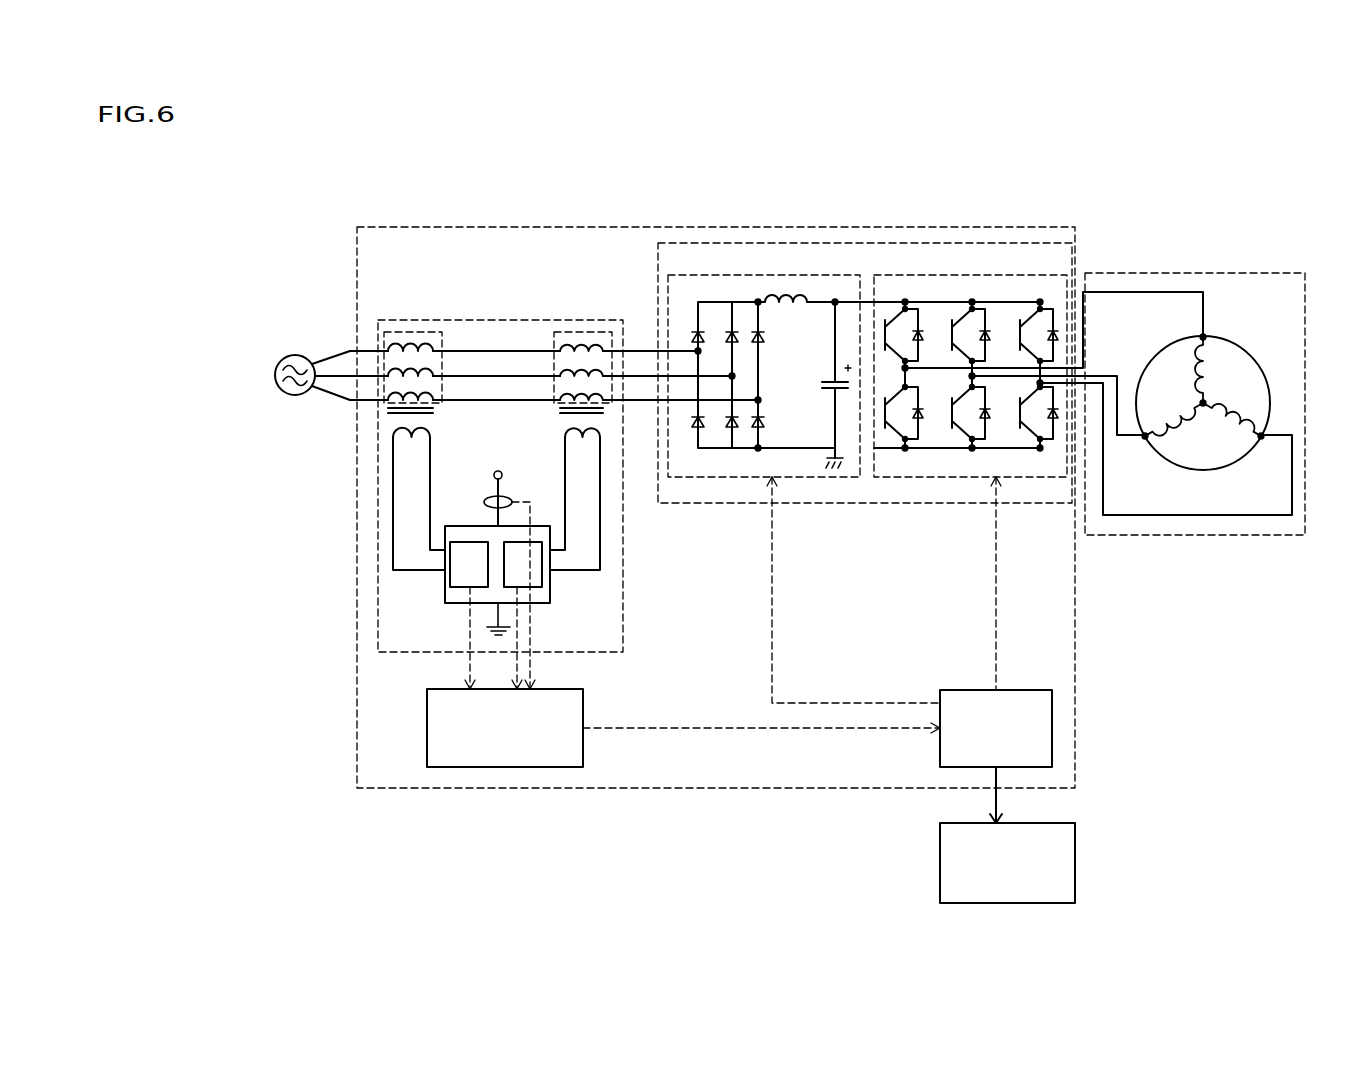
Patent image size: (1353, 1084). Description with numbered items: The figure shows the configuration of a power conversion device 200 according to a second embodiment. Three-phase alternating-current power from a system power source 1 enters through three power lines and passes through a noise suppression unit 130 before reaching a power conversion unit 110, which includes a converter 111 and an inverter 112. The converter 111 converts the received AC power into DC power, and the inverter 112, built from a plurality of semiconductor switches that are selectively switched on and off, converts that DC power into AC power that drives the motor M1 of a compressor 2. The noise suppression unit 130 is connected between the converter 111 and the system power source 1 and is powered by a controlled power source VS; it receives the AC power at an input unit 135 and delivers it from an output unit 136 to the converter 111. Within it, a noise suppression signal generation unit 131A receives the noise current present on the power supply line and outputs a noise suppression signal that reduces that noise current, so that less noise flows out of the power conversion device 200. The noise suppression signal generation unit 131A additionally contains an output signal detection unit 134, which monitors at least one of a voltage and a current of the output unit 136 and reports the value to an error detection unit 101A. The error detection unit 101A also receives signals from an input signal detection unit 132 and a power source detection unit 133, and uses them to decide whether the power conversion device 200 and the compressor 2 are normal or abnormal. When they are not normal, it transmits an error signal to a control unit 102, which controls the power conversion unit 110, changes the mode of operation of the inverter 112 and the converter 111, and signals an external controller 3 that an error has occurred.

The system power source 1 is at (295, 355).
The compressor 2 is at (1265, 273).
The controller 3 is at (1030, 823).
The error detection unit 101A is at (555, 689).
The control unit 102 is at (960, 690).
The power conversion unit 110 is at (868, 503).
The converter 111 is at (805, 275).
The inverter 112 is at (1000, 275).
The noise suppression unit 130 is at (585, 320).
The noise suppression signal generation unit 131A is at (550, 537).
The input signal detection unit 132 is at (450, 584).
The power source detection unit 133 is at (485, 500).
The output signal detection unit 134 is at (542, 580).
The input unit 135 is at (415, 332).
The output unit 136 is at (560, 332).
The power conversion device 200 is at (985, 227).
The motor M1 is at (1240, 346).